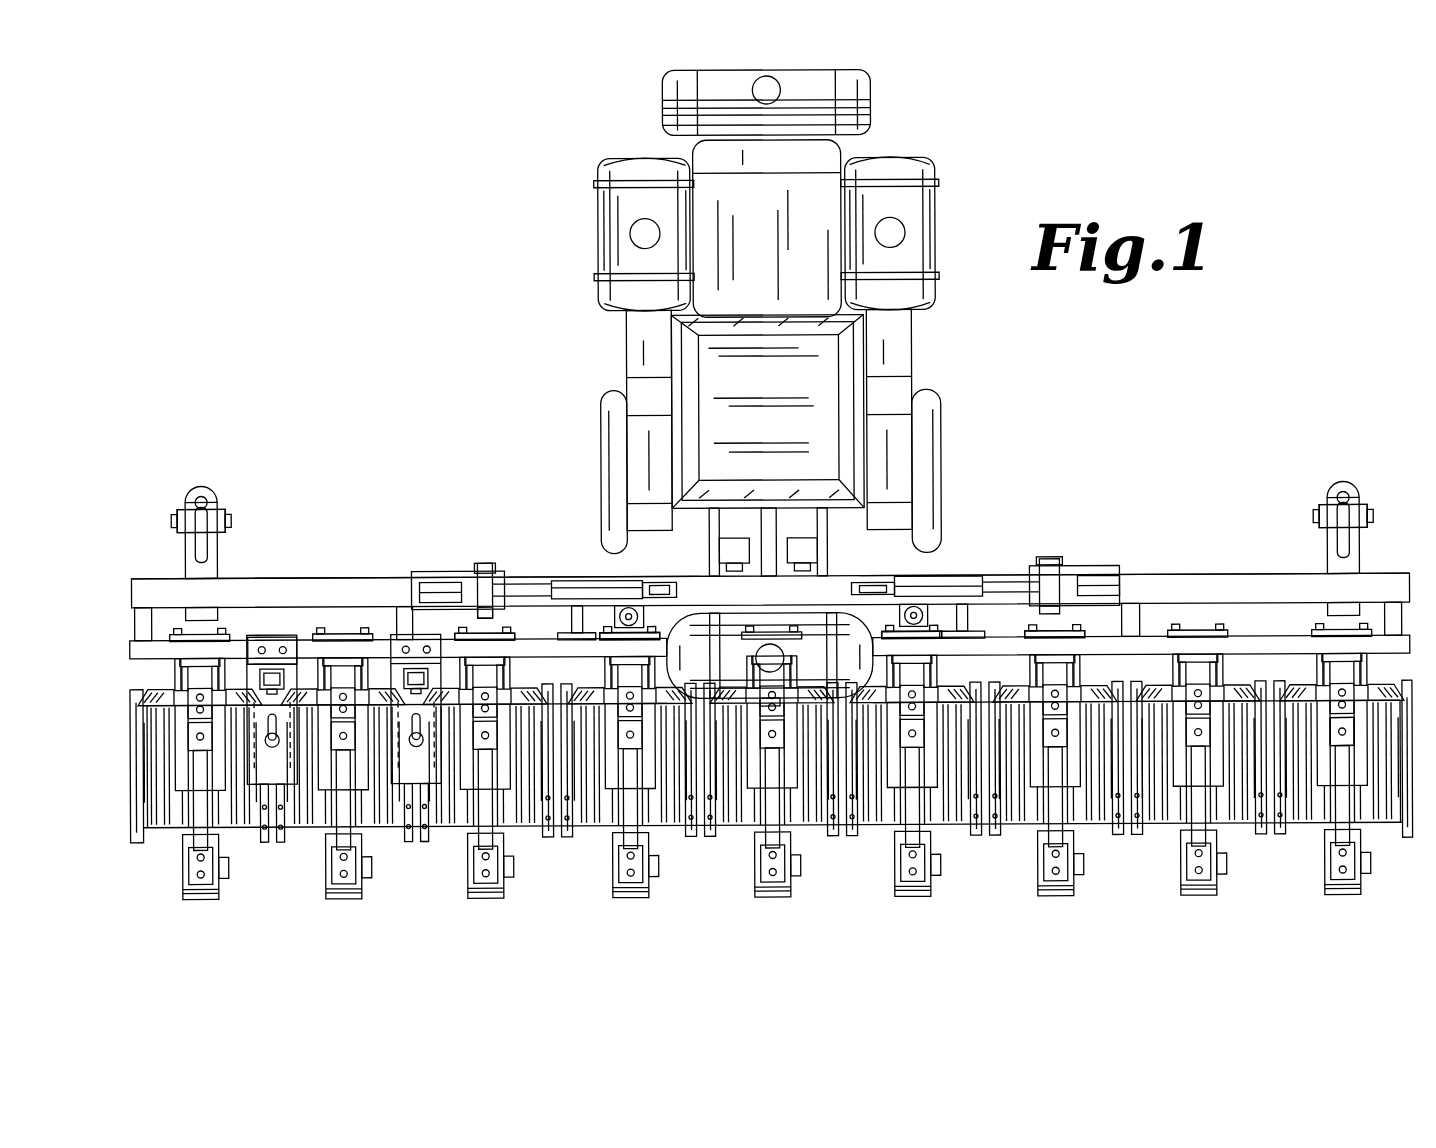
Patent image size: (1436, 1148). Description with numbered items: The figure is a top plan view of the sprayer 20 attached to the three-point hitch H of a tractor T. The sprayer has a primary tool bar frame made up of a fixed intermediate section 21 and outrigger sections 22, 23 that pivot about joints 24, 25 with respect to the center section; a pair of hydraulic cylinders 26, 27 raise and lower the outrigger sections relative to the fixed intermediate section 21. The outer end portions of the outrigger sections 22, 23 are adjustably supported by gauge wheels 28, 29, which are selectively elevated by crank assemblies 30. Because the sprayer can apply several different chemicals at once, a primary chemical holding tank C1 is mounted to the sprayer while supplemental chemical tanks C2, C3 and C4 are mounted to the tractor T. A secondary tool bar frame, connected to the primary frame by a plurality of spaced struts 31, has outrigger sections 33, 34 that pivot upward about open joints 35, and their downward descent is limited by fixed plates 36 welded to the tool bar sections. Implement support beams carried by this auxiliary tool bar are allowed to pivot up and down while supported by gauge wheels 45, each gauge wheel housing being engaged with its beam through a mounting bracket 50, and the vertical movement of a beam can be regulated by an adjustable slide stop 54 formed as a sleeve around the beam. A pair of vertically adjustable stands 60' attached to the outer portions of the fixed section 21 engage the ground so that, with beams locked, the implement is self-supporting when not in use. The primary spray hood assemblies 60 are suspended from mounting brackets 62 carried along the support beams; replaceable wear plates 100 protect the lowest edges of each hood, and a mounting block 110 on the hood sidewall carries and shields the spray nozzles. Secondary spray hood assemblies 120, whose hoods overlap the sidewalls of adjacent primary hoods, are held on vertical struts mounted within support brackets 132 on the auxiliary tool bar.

The tractor T is at (628, 326).
The three-point hitch H is at (695, 545).
The primary chemical holding tank C1 is at (770, 660).
The supplemental chemical tank C2 is at (598, 206).
The supplemental chemical tank C3 is at (937, 213).
The supplemental chemical tank C4 is at (862, 100).
The sprayer 20 is at (437, 568).
The fixed intermediate section 21 is at (830, 580).
The outrigger section 22 is at (275, 556).
The outrigger section 23 is at (1232, 562).
The joint 24 is at (487, 560).
The joint 25 is at (1052, 560).
The hydraulic cylinder 26 is at (562, 580).
The hydraulic cylinder 27 is at (1000, 555).
The gauge wheel 28 is at (200, 494).
The gauge wheel 29 is at (1370, 464).
The crank assembly 30 is at (228, 510).
The strut 31 is at (145, 603).
The outrigger section 33 is at (338, 592).
The outrigger section 34 is at (1292, 622).
The open joint 35 is at (548, 640).
The fixed plate 36 is at (530, 650).
The gauge wheel 45 is at (435, 865).
The mounting bracket 50 is at (1036, 880).
The adjustable slide stop 54 is at (1355, 695).
The primary spray hood assembly 60 is at (194, 764).
The vertically adjustable stand 60' is at (763, 571).
The mounting bracket 62 is at (1330, 736).
The wear plate 100 is at (860, 858).
The mounting block 110 is at (562, 838).
The secondary spray hood assembly 120 is at (300, 792).
The support bracket 132 is at (280, 622).